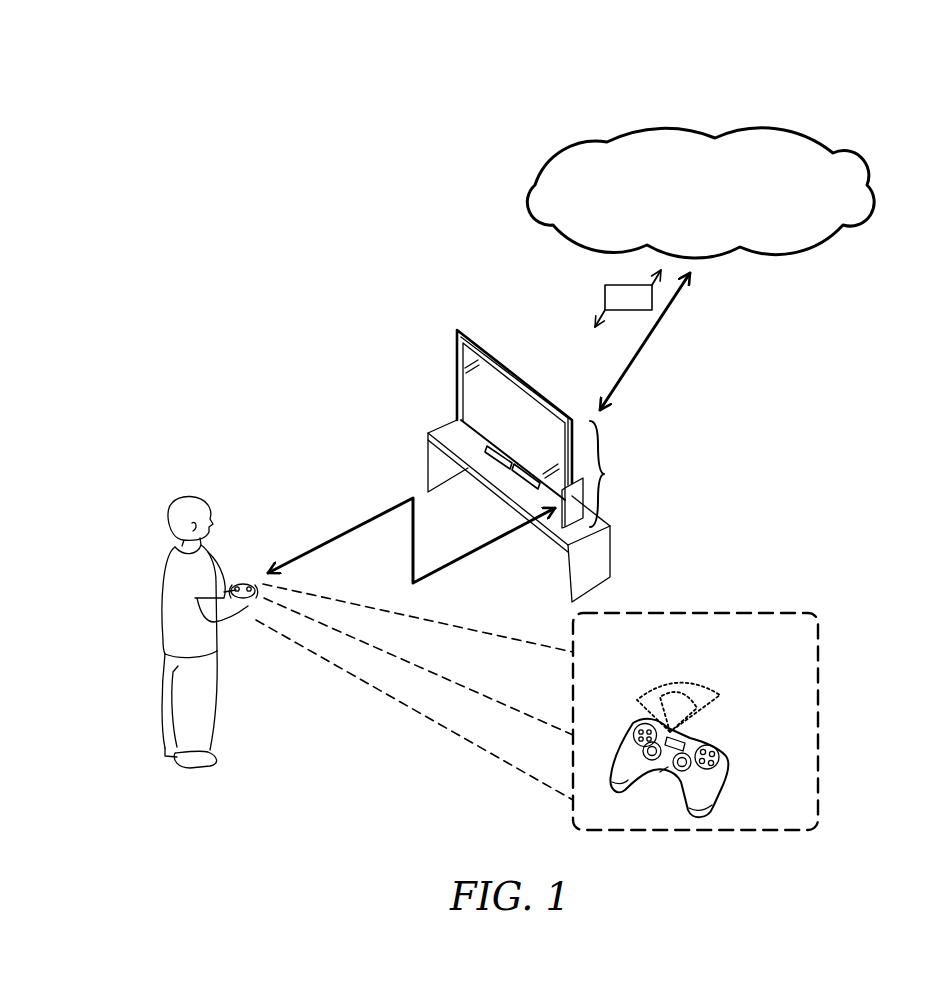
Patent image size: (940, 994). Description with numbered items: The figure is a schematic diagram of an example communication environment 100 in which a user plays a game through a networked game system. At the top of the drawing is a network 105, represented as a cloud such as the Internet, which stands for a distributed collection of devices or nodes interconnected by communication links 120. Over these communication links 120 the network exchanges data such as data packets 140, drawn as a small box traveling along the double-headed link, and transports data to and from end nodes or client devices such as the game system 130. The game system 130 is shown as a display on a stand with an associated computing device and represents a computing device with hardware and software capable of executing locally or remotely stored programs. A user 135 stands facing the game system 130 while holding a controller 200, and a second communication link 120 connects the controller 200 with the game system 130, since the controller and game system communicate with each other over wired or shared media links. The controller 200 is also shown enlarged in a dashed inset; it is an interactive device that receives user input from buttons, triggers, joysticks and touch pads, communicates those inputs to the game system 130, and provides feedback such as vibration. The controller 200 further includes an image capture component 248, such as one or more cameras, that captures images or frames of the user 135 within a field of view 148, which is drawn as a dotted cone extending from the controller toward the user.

The communication environment 100 is at (914, 52).
The network 105 is at (791, 186).
The data packets 140 is at (628, 298).
The communication links 120 is at (650, 336).
The game system 130 is at (540, 466).
The user 135 is at (168, 555).
The controller 200 is at (232, 578).
The field of view 148 is at (715, 670).
The image capture component 248 is at (668, 767).